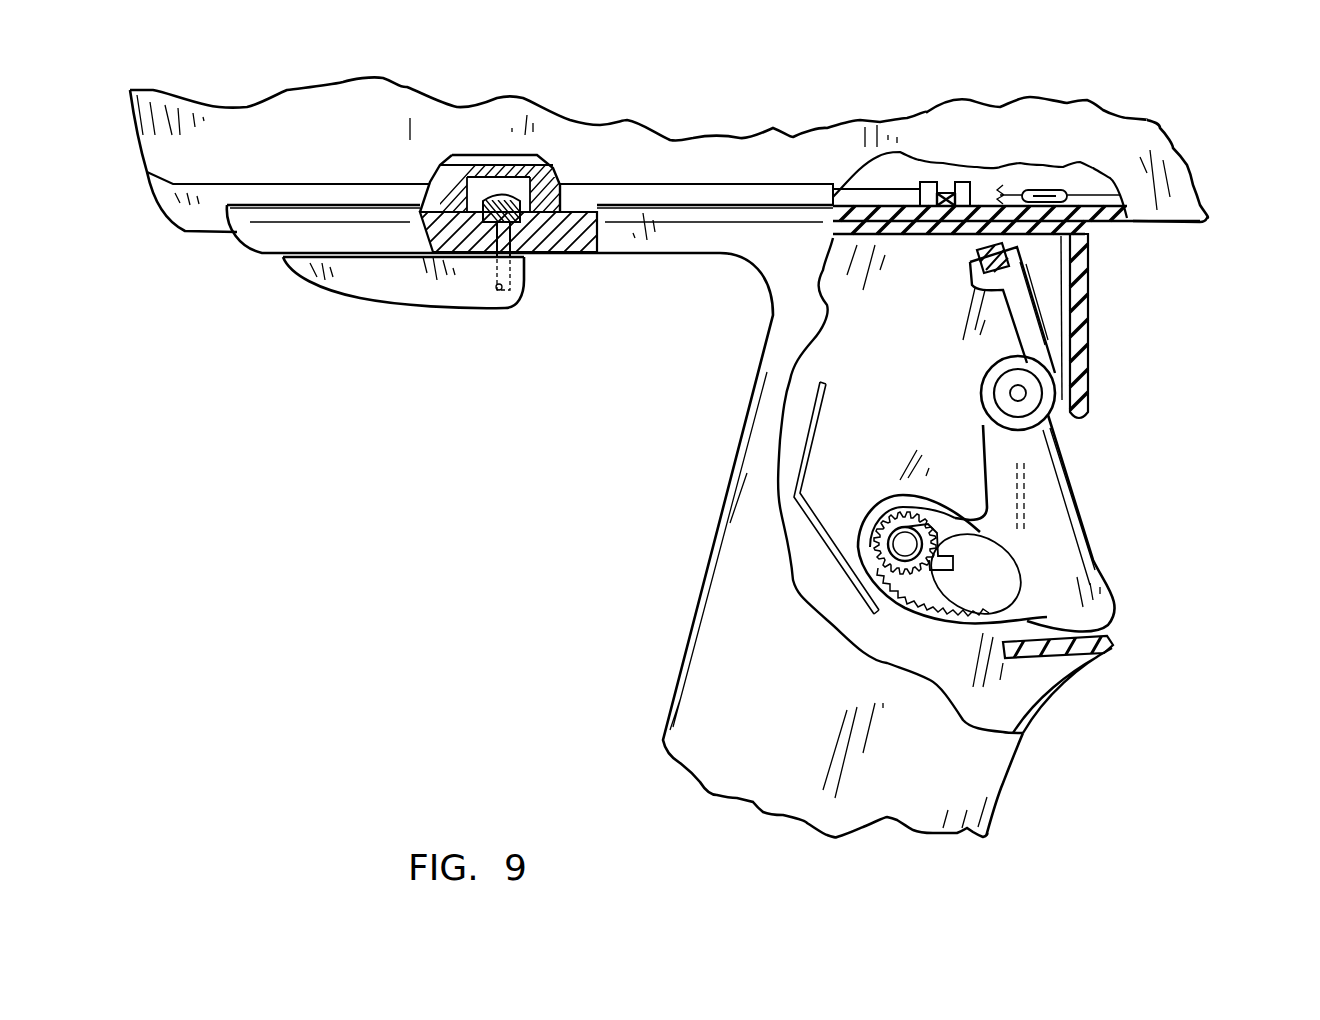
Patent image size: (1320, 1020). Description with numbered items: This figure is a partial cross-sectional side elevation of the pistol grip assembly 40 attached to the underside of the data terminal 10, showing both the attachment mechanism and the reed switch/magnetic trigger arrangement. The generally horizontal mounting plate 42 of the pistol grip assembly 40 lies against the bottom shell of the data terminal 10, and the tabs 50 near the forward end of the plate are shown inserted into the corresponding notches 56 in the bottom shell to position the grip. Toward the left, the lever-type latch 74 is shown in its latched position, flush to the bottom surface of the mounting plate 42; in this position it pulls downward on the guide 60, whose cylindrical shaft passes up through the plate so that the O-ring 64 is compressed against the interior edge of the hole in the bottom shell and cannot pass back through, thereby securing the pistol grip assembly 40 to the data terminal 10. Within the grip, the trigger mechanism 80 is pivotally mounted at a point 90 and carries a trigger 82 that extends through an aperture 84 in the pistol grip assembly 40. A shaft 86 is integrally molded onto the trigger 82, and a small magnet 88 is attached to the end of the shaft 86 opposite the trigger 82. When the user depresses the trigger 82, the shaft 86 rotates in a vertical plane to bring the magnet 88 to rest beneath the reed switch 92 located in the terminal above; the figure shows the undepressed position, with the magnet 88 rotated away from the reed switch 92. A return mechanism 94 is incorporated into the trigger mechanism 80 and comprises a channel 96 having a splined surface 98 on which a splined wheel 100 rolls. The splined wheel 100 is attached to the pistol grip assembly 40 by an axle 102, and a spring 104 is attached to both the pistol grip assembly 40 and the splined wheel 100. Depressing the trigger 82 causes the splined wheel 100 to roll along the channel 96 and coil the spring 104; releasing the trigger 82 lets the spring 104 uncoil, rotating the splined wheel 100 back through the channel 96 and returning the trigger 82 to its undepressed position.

The data terminal 10 is at (1180, 187).
The pistol grip assembly 40 is at (723, 593).
The mounting plate 42 is at (625, 240).
The tabs 50 is at (970, 187).
The notches 56 is at (953, 187).
The guide 60 is at (500, 252).
The O-ring 64 is at (545, 196).
The lever-type latch 74 is at (377, 287).
The trigger mechanism 80 is at (1047, 420).
The trigger 82 is at (1073, 523).
The aperture 84 is at (1067, 437).
The shaft 86 is at (1013, 313).
The magnet 88 is at (977, 250).
The pivot point 90 is at (1018, 393).
The reed switch 92 is at (1043, 189).
The return mechanism 94 is at (1003, 625).
The channel 96 is at (953, 533).
The splined surface 98 is at (930, 607).
The splined wheel 100 is at (883, 510).
The axle 102 is at (903, 547).
The spring 104 is at (1013, 543).